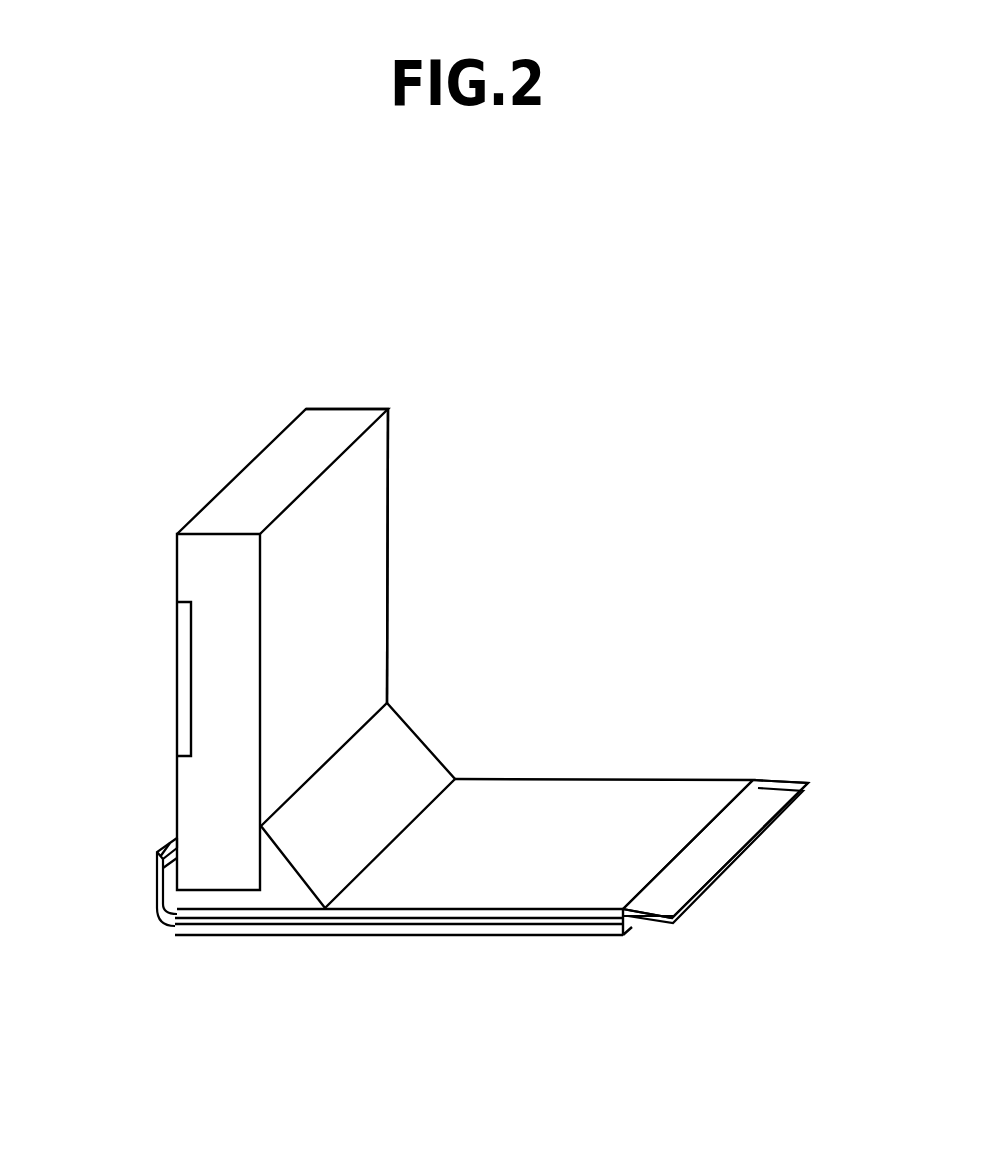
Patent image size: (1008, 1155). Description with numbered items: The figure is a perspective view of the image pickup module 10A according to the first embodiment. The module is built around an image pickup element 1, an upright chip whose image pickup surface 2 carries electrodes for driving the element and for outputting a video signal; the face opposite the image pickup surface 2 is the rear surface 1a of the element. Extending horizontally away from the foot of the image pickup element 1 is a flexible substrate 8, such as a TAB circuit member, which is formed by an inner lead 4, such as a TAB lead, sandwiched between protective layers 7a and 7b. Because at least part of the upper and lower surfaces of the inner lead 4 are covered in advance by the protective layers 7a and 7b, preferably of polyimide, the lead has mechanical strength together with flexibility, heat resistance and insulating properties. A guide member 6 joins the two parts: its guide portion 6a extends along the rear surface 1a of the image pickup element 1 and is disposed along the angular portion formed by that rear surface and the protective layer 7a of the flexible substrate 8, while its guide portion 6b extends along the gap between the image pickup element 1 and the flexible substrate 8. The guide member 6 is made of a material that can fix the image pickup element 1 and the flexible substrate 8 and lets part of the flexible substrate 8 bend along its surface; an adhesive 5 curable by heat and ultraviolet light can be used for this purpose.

The image pickup element 1 is at (240, 470).
The rear surface of the image pickup element 1a is at (356, 473).
The image pickup surface 2 is at (177, 698).
The inner lead 4 is at (155, 878).
The adhesive 5 is at (520, 798).
The guide member 6 is at (320, 1018).
The guide portion 6a is at (283, 873).
The guide portion 6b is at (418, 722).
The protective layer 7a is at (642, 780).
The protective layer 7b is at (468, 935).
The flexible substrate 8 is at (753, 876).
The image pickup module 10A is at (692, 347).